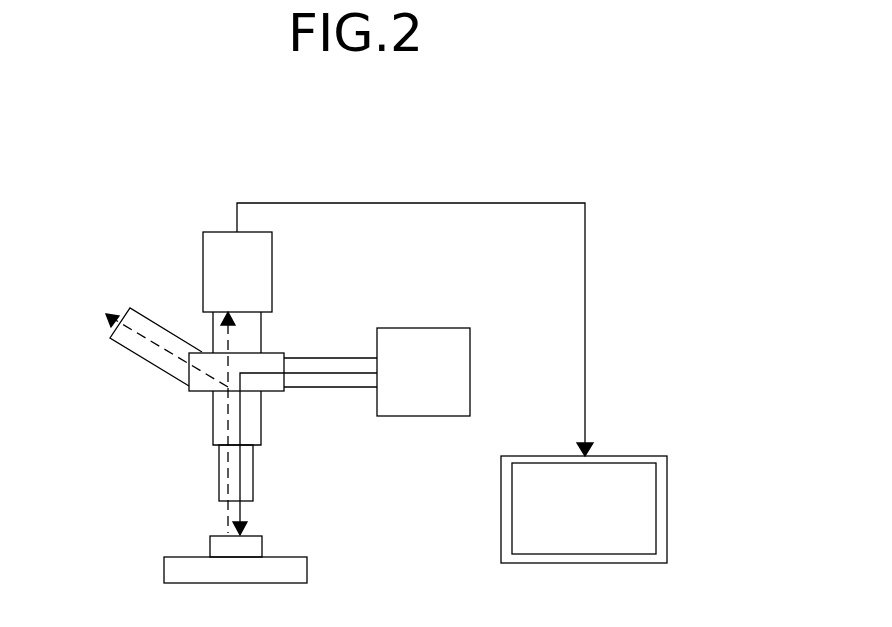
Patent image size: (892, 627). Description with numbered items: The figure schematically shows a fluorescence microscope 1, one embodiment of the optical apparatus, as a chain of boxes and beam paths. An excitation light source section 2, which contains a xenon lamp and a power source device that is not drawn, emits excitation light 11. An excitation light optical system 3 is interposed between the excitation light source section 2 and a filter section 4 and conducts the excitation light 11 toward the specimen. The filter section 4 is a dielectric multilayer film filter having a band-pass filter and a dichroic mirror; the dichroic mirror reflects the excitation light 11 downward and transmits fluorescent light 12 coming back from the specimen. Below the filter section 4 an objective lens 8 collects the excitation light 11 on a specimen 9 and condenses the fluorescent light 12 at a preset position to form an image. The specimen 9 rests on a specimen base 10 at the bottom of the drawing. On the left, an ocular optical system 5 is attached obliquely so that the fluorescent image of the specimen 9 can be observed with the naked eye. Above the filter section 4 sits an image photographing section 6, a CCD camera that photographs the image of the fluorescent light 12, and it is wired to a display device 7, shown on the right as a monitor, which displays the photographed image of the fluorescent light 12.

The fluorescence microscope 1 is at (120, 227).
The excitation light source section 2 is at (443, 333).
The excitation light optical system 3 is at (320, 356).
The filter section 4 is at (268, 352).
The ocular optical system 5 is at (127, 311).
The image photographing section 6 is at (215, 250).
The display device 7 is at (643, 458).
The objective lens 8 is at (220, 483).
The specimen 9 is at (253, 538).
The specimen base 10 is at (168, 572).
The excitation light 11 is at (241, 407).
The fluorescent light 12 is at (228, 427).